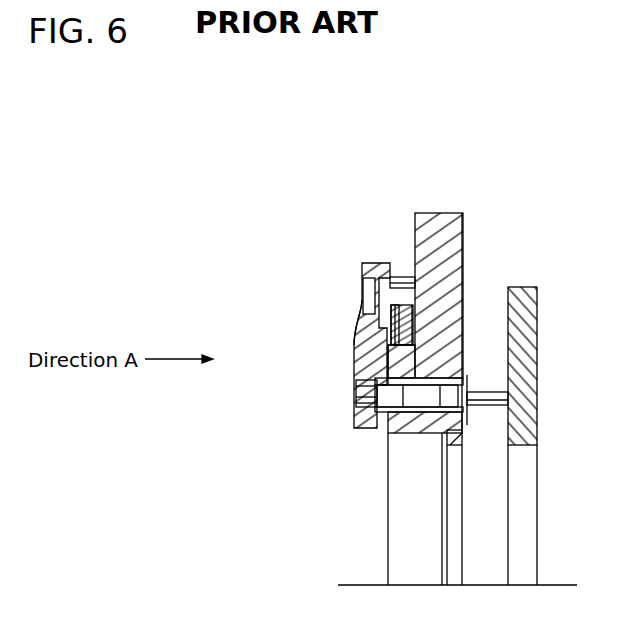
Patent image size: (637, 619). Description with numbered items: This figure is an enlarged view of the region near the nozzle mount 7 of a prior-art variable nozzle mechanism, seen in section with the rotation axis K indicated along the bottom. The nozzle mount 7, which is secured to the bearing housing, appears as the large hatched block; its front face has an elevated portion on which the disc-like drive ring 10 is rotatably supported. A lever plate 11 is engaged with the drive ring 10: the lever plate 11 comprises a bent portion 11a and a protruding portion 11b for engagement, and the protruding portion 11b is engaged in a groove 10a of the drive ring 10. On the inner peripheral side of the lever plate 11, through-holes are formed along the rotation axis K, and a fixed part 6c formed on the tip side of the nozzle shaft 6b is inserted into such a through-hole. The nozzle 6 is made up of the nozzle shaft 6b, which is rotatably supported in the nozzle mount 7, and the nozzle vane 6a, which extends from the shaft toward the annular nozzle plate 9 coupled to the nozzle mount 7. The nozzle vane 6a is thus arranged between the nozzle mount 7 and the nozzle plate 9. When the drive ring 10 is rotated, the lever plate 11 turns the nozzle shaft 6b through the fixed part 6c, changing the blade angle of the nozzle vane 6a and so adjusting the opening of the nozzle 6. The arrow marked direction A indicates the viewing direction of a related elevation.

The nozzle mount 7 is at (452, 230).
The drive ring 10 is at (416, 332).
The groove 10a is at (397, 318).
The lever plate 11 is at (362, 381).
The bent portion 11a is at (359, 341).
The protruding portion for engagement 11b is at (406, 276).
The nozzle 6 is at (467, 405).
The nozzle vane 6a is at (487, 392).
The nozzle shaft 6b is at (413, 415).
The fixed part 6c is at (362, 397).
The nozzle plate 9 is at (530, 330).
The rotation axis K is at (558, 585).